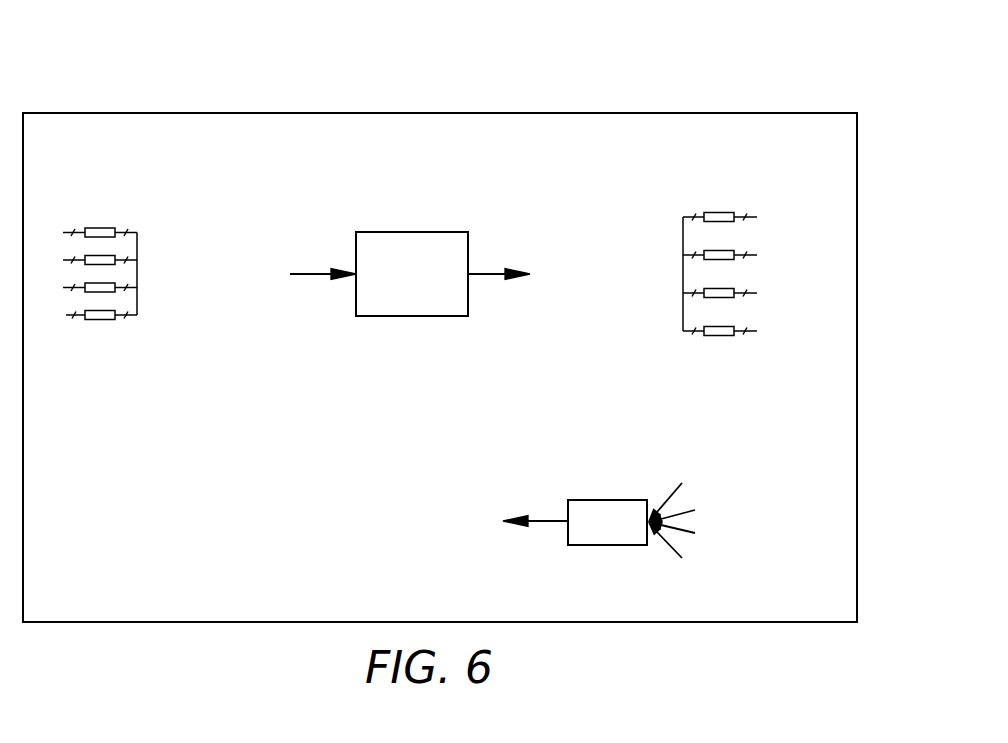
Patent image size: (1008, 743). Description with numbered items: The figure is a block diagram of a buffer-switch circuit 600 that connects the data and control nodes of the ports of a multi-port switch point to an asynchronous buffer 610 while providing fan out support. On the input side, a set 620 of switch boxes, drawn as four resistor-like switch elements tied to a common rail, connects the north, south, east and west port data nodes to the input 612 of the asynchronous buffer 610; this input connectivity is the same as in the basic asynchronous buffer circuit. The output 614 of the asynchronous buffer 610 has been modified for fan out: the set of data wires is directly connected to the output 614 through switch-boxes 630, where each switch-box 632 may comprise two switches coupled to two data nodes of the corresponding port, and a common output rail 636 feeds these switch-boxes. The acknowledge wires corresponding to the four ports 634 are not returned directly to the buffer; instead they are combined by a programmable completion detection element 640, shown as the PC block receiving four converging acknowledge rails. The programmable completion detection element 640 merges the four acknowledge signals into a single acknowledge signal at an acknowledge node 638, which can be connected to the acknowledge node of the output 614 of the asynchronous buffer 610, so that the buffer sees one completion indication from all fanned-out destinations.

The buffer-switch circuit 600 is at (778, 65).
The asynchronous buffer 610 is at (426, 232).
The input 612 is at (315, 272).
The output 614 is at (499, 272).
The set of switch boxes 620 is at (143, 187).
The switch-boxes 630 is at (736, 241).
The switch-box 632 is at (705, 212).
The four ports 634 is at (692, 493).
The R0d node bus 636 is at (683, 318).
The acknowledge node 638 is at (536, 520).
The programmable completion detection element 640 is at (608, 500).